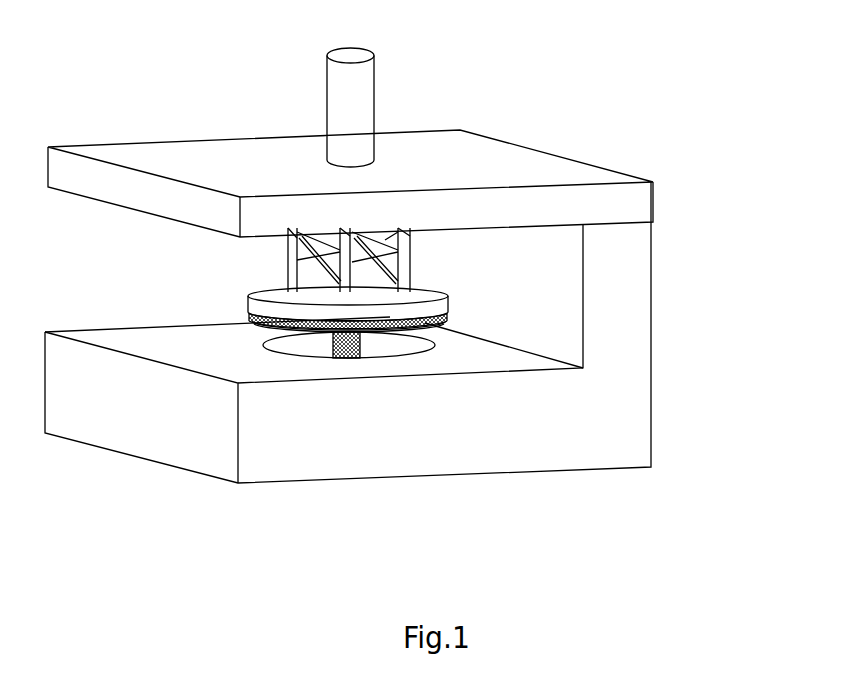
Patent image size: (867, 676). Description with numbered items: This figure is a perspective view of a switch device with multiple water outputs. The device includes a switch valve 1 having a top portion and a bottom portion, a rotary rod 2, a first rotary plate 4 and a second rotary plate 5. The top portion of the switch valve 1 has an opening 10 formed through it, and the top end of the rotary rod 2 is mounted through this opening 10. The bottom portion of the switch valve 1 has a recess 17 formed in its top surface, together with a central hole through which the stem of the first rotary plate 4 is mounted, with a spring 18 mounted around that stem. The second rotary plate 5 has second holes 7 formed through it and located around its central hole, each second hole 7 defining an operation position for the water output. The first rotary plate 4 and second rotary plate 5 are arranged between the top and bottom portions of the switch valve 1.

The switch valve 1 is at (603, 362).
The rotary rod 2 is at (360, 112).
The first rotary plate 4 is at (277, 323).
The second rotary plate 5 is at (437, 316).
The second holes 7 is at (449, 296).
The opening 10 is at (328, 165).
The recess 17 is at (397, 353).
The spring 18 is at (343, 362).